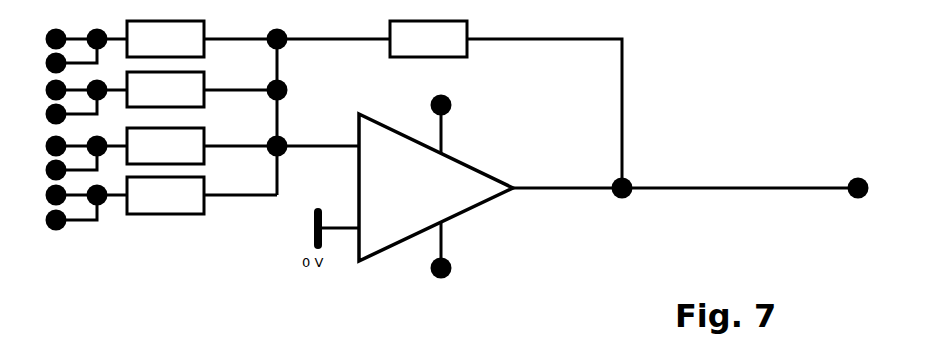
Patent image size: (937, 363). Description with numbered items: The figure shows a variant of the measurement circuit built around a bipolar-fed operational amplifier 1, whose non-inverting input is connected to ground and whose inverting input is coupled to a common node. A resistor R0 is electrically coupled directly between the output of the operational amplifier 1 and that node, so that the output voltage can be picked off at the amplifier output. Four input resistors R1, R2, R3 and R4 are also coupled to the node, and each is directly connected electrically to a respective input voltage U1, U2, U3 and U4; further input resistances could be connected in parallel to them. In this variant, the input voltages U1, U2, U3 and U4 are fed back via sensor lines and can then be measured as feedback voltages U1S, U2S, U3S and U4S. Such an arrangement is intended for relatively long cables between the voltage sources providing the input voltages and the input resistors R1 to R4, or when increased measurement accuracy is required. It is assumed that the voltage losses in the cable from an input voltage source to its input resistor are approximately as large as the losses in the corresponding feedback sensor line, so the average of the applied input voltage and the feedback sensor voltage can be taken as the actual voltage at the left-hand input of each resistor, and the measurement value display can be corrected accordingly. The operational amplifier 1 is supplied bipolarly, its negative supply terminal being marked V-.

The operational amplifier 1 is at (477, 163).
The resistor R0 is at (428, 39).
The first input resistor R1 is at (165, 39).
The input resistor R2 is at (165, 89).
The input resistor R3 is at (165, 146).
The input resistor R4 is at (165, 195).
The input voltage U1 is at (41, 39).
The feedback voltage U1S is at (36, 63).
The input voltage U2 is at (41, 90).
The feedback voltage U2S is at (36, 114).
The input voltage U3 is at (41, 146).
The feedback voltage U3S is at (36, 170).
The input voltage U4 is at (41, 195).
The feedback voltage U4S is at (36, 220).
The negative supply terminal V- is at (452, 269).